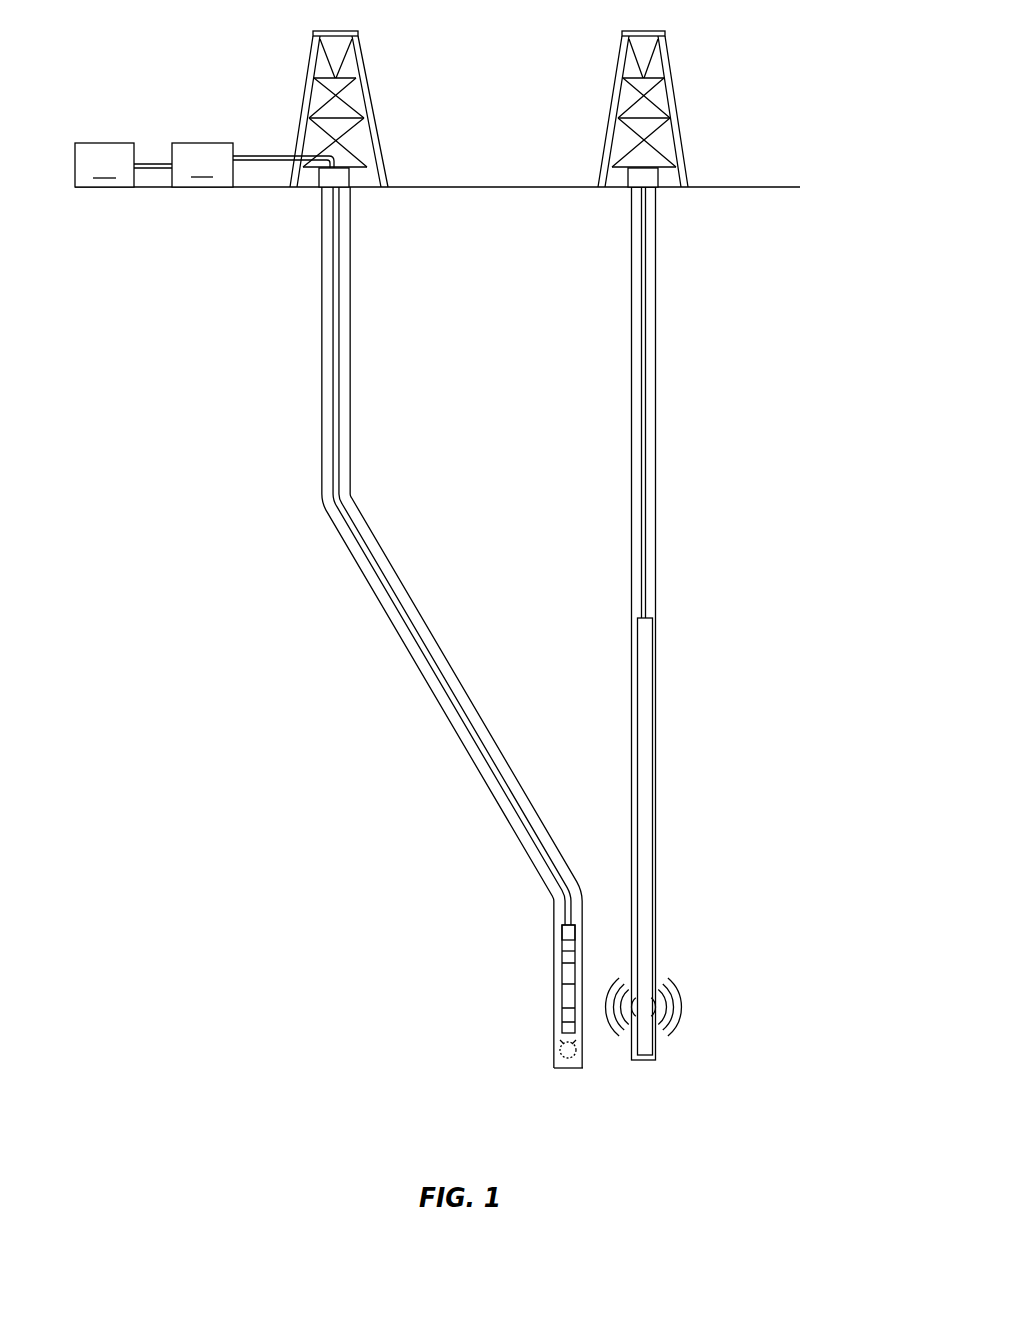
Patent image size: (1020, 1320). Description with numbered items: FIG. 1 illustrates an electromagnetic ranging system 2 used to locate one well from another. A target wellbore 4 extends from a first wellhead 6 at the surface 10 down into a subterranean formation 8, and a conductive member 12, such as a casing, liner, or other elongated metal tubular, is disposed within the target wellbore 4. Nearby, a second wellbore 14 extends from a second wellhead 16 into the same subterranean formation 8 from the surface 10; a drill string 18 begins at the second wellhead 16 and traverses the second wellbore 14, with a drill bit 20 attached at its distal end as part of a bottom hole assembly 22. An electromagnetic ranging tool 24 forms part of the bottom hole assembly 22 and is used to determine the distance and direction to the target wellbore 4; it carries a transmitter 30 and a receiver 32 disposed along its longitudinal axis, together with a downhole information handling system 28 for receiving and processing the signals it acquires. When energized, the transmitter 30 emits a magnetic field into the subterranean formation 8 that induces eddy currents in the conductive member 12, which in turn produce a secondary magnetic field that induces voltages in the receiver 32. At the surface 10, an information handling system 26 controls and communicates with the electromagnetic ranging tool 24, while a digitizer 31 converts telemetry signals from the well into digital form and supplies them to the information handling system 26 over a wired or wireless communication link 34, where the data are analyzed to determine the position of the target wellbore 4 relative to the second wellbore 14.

The electromagnetic ranging system 2 is at (281, 684).
The target wellbore 4 is at (660, 325).
The first wellhead 6 is at (660, 177).
The subterranean formation 8 is at (562, 781).
The surface 10 is at (486, 186).
The conductive member 12 is at (654, 685).
The second wellbore 14 is at (326, 348).
The second wellhead 16 is at (352, 177).
The drill string 18 is at (380, 590).
The drill bit 20 is at (569, 1069).
The bottom hole assembly 22 is at (505, 979).
The electromagnetic ranging tool 24 is at (563, 960).
The information handling system 26 is at (104, 165).
The downhole information handling system 28 is at (563, 930).
The transmitter 30 is at (563, 948).
The receiver 32 is at (566, 1012).
The digitizer 31 is at (253, 165).
The communication link 34 is at (155, 164).